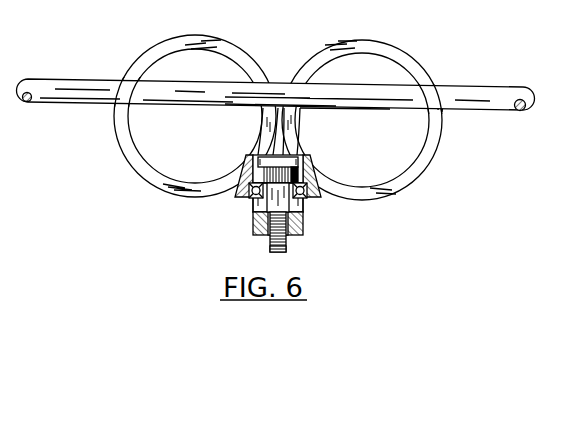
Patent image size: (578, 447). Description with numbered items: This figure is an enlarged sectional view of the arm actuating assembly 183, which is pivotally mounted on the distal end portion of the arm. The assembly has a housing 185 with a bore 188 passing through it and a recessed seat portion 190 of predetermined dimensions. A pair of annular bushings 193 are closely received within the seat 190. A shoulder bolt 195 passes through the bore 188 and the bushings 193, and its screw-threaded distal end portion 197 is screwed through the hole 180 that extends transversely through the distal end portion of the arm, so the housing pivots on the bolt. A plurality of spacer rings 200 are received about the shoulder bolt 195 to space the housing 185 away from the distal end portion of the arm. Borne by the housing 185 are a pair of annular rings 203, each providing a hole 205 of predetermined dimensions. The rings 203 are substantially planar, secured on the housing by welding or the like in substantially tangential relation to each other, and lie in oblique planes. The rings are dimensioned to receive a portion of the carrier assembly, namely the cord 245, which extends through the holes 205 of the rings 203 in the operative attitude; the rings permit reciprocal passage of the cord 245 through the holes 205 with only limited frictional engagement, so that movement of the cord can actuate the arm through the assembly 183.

The arm actuating assembly 183 is at (283, 65).
The annular rings 203 is at (162, 46).
The hole 205 is at (227, 78).
The cord 245 is at (237, 97).
The bore 188 is at (270, 160).
The housing 185 is at (246, 182).
The recessed seat portion 190 is at (307, 187).
The annular bushings 193 is at (250, 199).
The shoulder bolt 195 is at (266, 222).
The spacer rings 200 is at (307, 212).
The hole 180 is at (286, 233).
The screw-threaded distal end portion 197 is at (277, 253).